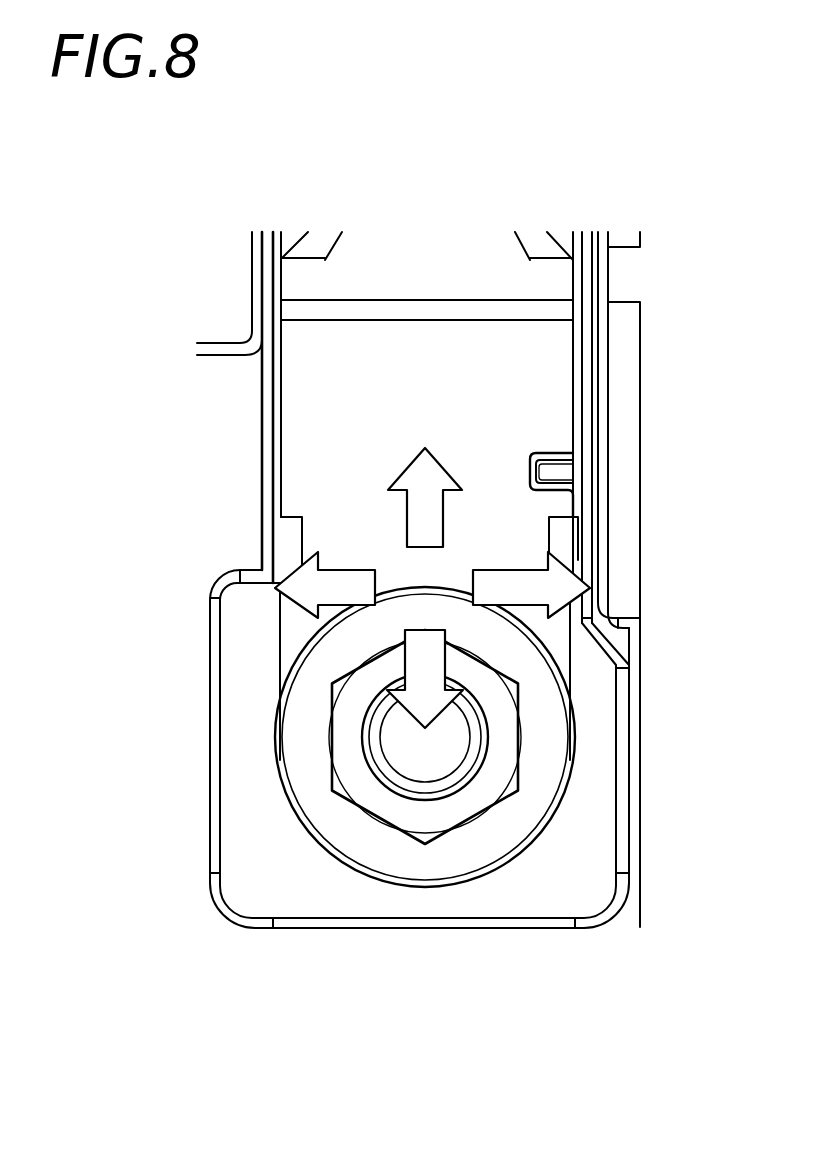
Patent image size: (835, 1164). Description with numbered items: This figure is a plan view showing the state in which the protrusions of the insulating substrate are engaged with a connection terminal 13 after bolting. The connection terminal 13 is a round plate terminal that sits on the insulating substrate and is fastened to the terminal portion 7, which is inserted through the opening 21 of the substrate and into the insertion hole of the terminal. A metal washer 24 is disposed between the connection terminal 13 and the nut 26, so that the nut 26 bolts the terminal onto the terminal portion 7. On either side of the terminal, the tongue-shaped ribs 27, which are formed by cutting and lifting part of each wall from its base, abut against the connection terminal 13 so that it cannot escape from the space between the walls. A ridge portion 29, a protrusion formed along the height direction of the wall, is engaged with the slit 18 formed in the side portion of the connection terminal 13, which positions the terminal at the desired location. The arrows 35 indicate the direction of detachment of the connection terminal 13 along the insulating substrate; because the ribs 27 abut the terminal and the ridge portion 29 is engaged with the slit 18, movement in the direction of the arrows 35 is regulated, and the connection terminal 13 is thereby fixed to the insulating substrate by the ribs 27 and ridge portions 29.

The terminal portion 7 is at (395, 737).
The connection terminal 13 is at (530, 410).
The slit 18 is at (530, 468).
The opening 21 is at (248, 880).
The metal washer 24 is at (350, 870).
The nut 26 is at (467, 818).
The rib 27 is at (293, 537).
The ridge portion 29 is at (567, 472).
The arrow 35 is at (437, 462).